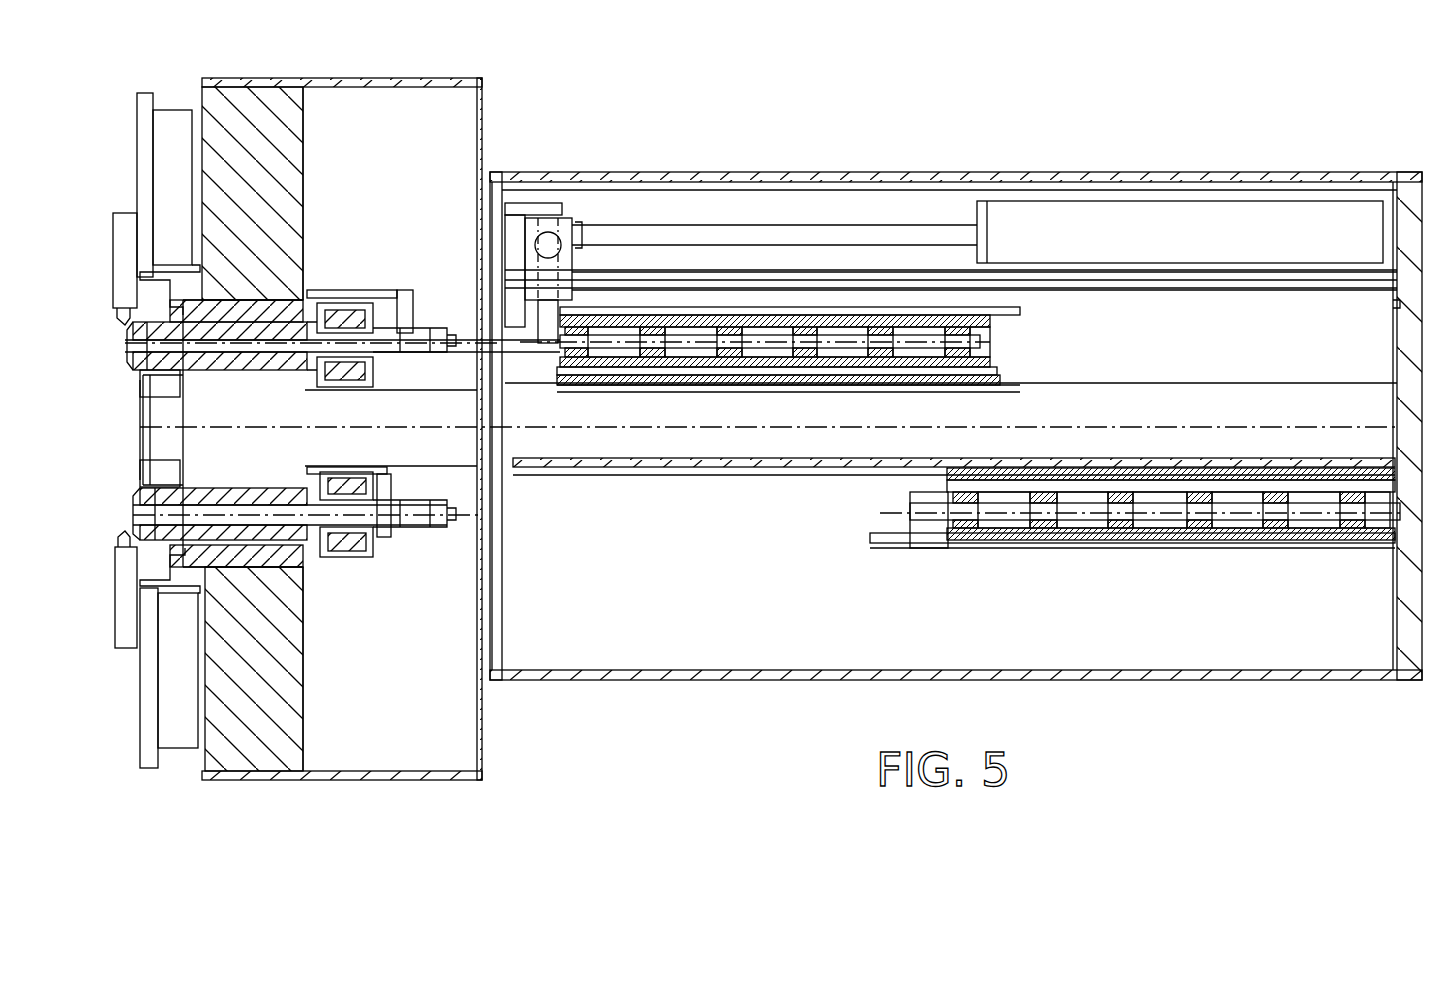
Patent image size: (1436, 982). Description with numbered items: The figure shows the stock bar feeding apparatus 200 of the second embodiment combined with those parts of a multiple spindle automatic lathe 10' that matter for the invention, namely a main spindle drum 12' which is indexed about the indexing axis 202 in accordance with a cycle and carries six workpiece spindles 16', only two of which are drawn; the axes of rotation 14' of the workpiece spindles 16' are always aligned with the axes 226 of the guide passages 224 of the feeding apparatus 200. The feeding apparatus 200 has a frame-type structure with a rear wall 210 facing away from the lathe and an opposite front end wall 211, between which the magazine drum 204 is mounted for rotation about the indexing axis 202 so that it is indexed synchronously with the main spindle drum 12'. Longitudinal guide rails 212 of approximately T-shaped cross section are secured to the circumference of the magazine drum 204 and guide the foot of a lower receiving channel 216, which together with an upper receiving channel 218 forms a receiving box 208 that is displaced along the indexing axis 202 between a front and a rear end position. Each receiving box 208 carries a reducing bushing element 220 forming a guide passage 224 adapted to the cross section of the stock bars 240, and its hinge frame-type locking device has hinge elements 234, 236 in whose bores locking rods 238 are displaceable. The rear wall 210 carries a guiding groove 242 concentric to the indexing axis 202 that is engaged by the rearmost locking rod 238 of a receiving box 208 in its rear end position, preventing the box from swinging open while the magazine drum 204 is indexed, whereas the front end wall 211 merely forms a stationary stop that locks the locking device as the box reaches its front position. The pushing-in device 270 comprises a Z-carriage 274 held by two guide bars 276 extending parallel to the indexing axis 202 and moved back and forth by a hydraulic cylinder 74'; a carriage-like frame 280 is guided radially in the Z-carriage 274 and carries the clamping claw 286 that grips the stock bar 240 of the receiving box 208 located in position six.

The multiple spindle automatic lathe 10' is at (374, 402).
The main spindle drum 12' is at (120, 431).
The axis of rotation 14' is at (342, 403).
The workpiece spindle 16' is at (239, 430).
The hydraulic cylinder 74' is at (1180, 169).
The stock bar feeding apparatus 200 is at (1262, 147).
The indexing axis 202 is at (1273, 424).
The magazine drum 204 is at (1120, 387).
The receiving box 208 is at (955, 359).
The rear wall 210 is at (1410, 200).
The front end wall 211 is at (493, 203).
The longitudinal guide rail 212 is at (1262, 378).
The lower receiving channel 216 is at (1075, 518).
The upper receiving channel 218 is at (1010, 502).
The reducing bushing element 220 is at (1220, 517).
The guide passage 224 is at (1168, 517).
The axis of guide passage 226 is at (985, 337).
The hinge element 234 is at (775, 300).
The hinge element 236 is at (650, 373).
The locking rod 238 is at (850, 307).
The stock bar 240 is at (467, 337).
The guiding groove 242 is at (1393, 306).
The pushing-in device 270 is at (578, 203).
The Z-carriage 274 is at (653, 277).
The guide bar 276 is at (693, 303).
The carriage-like frame 280 is at (532, 222).
The clamping claw 286 is at (552, 348).